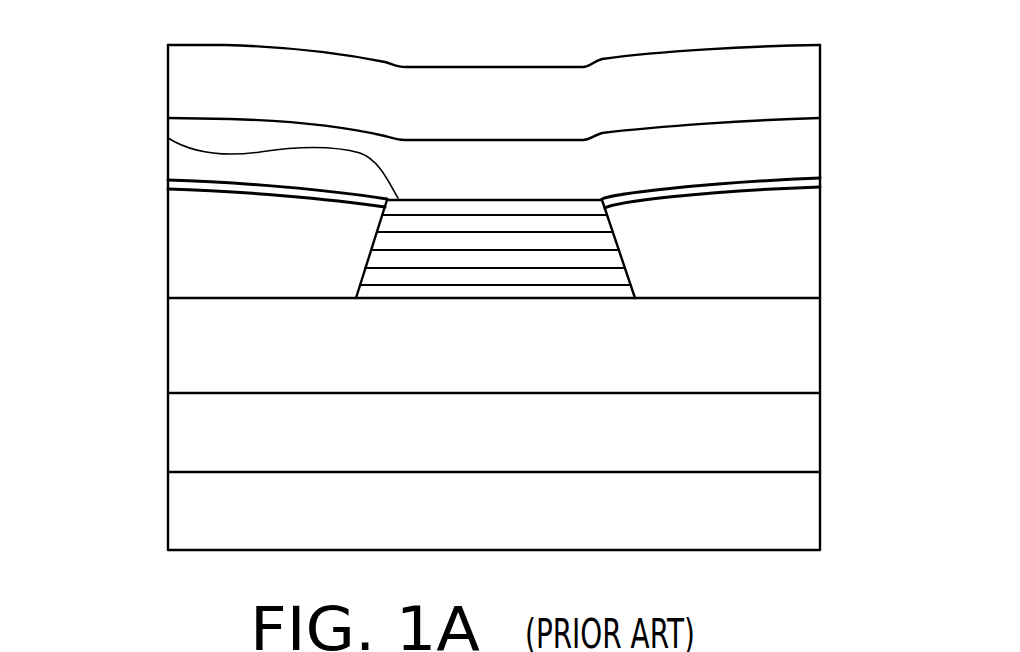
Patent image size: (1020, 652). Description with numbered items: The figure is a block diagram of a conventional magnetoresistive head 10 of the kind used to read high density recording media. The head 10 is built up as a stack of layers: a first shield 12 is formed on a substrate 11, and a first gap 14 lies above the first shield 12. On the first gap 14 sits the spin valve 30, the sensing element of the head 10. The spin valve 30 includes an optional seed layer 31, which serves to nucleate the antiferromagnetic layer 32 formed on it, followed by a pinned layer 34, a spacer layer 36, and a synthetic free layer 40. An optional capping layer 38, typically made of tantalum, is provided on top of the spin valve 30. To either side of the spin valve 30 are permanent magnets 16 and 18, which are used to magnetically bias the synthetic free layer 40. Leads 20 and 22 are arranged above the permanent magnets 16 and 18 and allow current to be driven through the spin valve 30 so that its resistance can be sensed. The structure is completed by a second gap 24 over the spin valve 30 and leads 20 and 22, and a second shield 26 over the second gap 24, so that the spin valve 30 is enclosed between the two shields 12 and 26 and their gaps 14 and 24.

The magnetoresistive head 10 is at (497, 14).
The substrate 11 is at (820, 516).
The first shield 12 is at (820, 431).
The first gap 14 is at (820, 362).
The permanent magnet 16 is at (820, 277).
The permanent magnet 18 is at (168, 198).
The lead 20 is at (168, 181).
The lead 22 is at (820, 185).
The second gap 24 is at (820, 140).
The second shield 26 is at (820, 88).
The spin valve 30 is at (655, 202).
The seed layer 31 is at (357, 296).
The antiferromagnetic layer 32 is at (366, 268).
The pinned layer 34 is at (371, 250).
The spacer layer 36 is at (377, 232).
The capping layer 38 is at (167, 138).
The synthetic free layer 40 is at (382, 215).